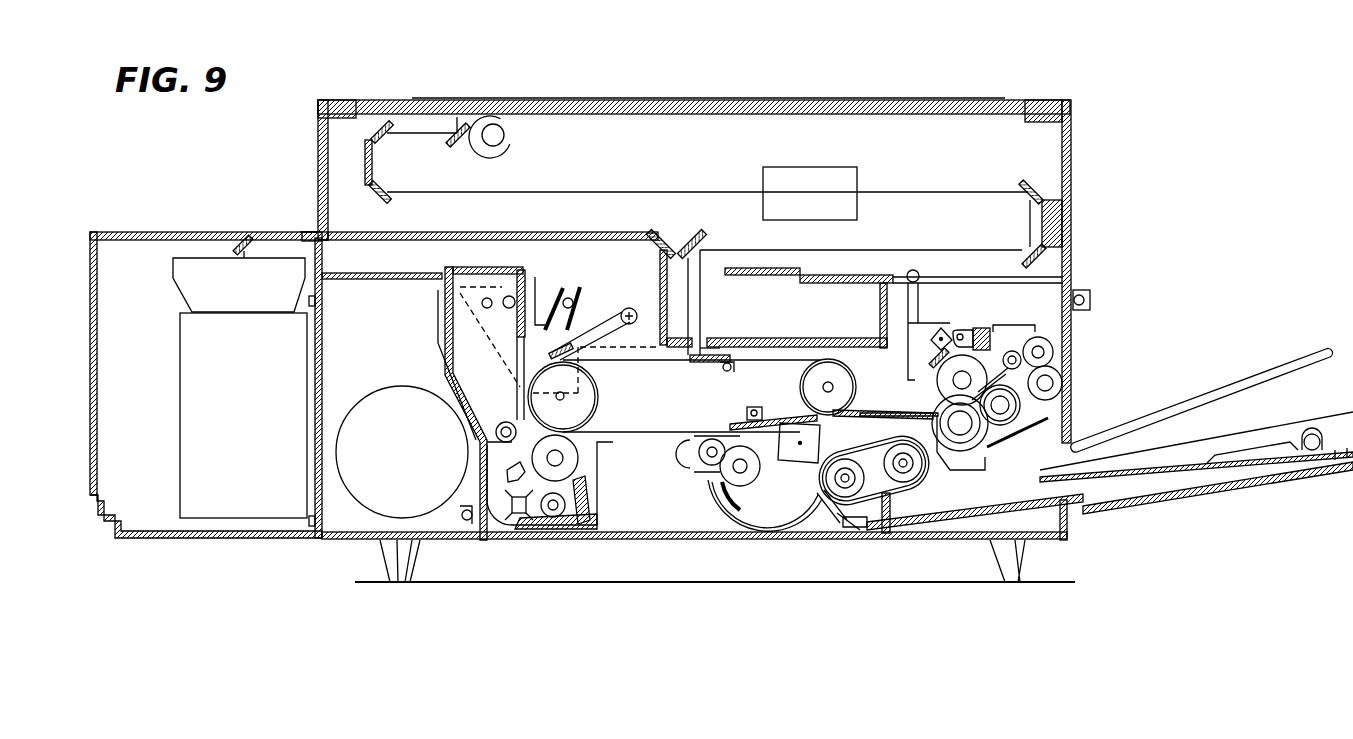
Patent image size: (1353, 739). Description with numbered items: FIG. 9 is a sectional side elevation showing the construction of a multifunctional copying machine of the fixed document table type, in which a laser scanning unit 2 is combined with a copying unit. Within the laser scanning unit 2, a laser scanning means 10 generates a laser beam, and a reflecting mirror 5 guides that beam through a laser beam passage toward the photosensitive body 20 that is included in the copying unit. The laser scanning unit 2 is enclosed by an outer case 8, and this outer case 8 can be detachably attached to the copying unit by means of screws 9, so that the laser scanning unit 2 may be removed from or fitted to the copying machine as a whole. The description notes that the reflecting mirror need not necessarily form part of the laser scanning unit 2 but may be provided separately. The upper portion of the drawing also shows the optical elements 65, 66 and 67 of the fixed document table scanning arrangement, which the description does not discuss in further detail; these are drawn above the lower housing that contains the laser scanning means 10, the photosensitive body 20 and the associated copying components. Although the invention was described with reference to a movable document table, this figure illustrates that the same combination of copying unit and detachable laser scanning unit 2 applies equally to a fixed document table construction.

The laser scanning unit 2 is at (138, 248).
The reflecting mirror 5 is at (236, 237).
The outer case 8 is at (90, 265).
The screws 9 is at (327, 304).
The laser scanning means 10 is at (226, 507).
The photosensitive body 20 is at (660, 434).
The lamp housing 65 is at (818, 176).
The lens 66 is at (503, 139).
The mirror 67 is at (385, 122).